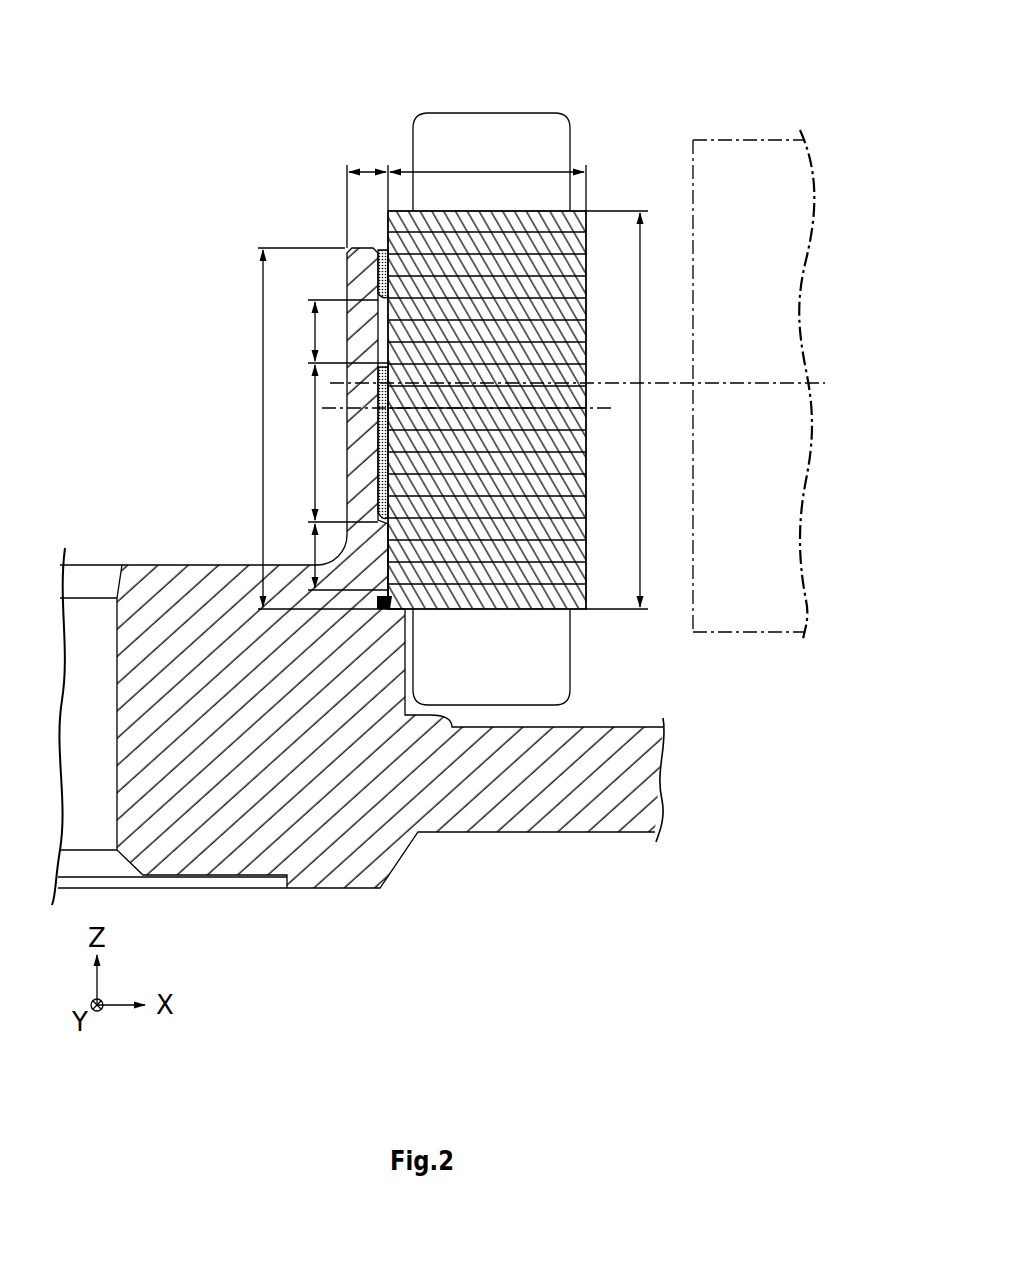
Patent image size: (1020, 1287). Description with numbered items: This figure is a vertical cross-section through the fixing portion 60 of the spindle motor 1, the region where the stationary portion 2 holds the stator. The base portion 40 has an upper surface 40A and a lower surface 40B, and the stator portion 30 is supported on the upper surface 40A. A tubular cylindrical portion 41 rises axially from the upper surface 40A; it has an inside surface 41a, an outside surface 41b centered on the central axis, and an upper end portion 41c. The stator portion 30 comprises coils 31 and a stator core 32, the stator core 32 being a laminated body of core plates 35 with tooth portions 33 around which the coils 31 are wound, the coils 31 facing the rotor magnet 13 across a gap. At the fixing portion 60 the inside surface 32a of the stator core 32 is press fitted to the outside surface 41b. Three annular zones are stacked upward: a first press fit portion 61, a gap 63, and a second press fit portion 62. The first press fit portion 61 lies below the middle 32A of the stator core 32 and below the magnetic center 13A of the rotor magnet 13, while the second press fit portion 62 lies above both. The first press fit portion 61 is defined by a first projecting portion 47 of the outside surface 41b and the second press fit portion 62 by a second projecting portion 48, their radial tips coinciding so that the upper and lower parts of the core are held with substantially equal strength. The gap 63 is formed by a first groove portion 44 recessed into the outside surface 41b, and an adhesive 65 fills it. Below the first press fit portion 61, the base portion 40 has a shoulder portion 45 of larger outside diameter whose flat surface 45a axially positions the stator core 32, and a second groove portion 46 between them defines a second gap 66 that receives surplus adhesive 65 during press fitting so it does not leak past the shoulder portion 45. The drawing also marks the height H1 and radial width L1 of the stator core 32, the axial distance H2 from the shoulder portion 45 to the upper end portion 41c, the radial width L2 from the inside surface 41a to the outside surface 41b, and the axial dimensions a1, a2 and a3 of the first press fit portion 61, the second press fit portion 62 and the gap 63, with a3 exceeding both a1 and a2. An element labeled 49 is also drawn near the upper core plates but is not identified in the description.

The spindle motor 1 is at (120, 115).
The stationary portion 2 is at (632, 838).
The rotor magnet 13 is at (718, 140).
The magnetic center 13A is at (365, 383).
The stator portion 30 is at (590, 207).
The coils 31 is at (485, 113).
The stator core 32 is at (480, 210).
The inside surface 32a is at (395, 437).
The middle 32A is at (345, 408).
The tooth portions 33 is at (586, 378).
The core plates 35 is at (586, 268).
The base portion 40 is at (340, 873).
The upper surface 40A is at (175, 563).
The lower surface 40B is at (462, 835).
The cylindrical portion 41 is at (343, 245).
The inside surface 41a is at (346, 290).
The outside surface 41b is at (380, 288).
The upper end portion 41c is at (367, 245).
The first groove portion 44 is at (380, 485).
The shoulder portion 45 is at (425, 686).
The flat surface 45a is at (415, 650).
The second groove portion 46 is at (383, 612).
The first projecting portion 47 is at (400, 552).
The second projecting portion 48 is at (400, 358).
The upper core sheet 49 is at (392, 285).
The fixing portion 60 is at (400, 392).
The first press fit portion 61 is at (402, 602).
The second press fit portion 62 is at (400, 330).
The gap 63 is at (400, 470).
The adhesive 65 is at (390, 265).
The second gap 66 is at (393, 592).
The height of the stator core H1 is at (640, 436).
The axial distance from the shoulder portion to the upper end portion H2 is at (263, 378).
The radial width of the stator core L1 is at (518, 170).
The radial width of the cylindrical portion L2 is at (349, 168).
The axial dimension of the first press fit portion a1 is at (315, 545).
The axial dimension of the second press fit portion a2 is at (312, 340).
The axial dimension of the gap a3 is at (312, 455).